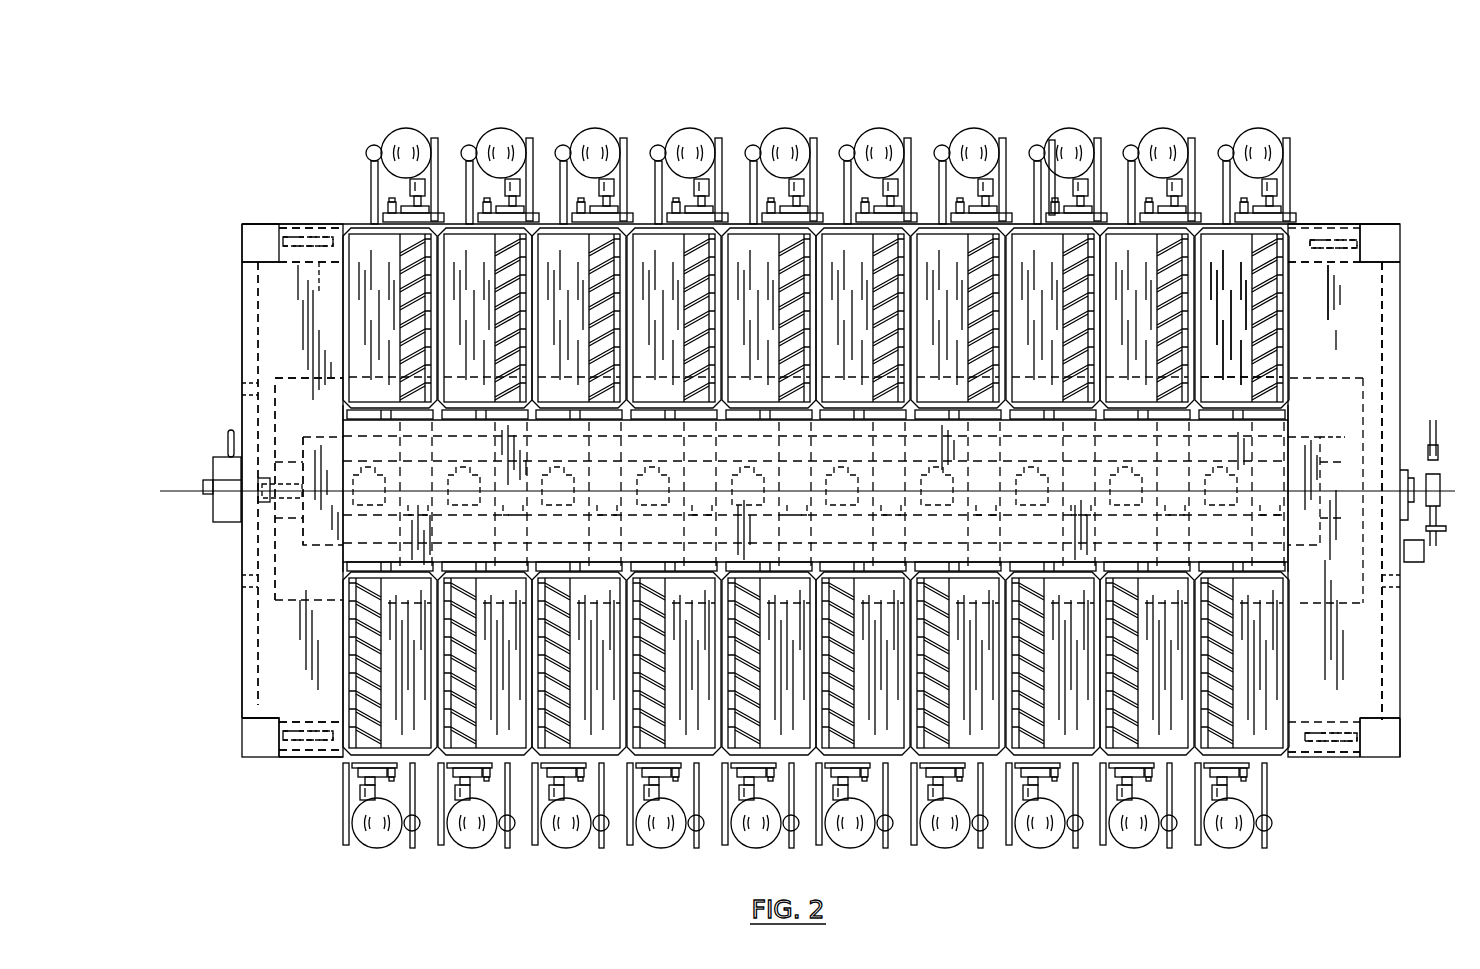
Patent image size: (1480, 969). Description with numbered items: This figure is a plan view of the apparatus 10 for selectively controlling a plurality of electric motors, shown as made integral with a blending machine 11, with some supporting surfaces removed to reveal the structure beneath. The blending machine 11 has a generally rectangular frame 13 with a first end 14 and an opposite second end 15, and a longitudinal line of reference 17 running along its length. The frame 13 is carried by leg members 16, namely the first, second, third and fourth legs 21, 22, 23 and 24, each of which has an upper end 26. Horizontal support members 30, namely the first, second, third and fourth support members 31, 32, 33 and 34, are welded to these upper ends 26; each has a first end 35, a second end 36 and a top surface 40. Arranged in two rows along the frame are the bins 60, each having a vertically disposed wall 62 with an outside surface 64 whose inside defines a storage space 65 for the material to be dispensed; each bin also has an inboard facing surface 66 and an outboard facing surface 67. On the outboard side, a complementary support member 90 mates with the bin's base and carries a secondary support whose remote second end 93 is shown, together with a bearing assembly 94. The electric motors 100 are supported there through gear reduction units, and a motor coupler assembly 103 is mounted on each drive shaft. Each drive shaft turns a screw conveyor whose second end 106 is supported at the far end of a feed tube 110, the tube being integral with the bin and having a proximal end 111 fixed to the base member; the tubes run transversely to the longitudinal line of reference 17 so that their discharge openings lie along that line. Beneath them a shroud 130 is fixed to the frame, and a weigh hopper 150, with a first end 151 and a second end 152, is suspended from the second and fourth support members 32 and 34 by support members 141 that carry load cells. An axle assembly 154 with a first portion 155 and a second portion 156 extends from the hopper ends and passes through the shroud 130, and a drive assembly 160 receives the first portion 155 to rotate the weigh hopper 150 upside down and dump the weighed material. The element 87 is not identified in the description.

The apparatus 10 is at (815, 92).
The blending machine 11 is at (1357, 224).
The frame 13 is at (1400, 313).
The first end 14 is at (242, 323).
The second end 15 is at (1400, 378).
The leg members 16 is at (242, 228).
The longitudinal line of reference 17 is at (200, 491).
The first leg 21 is at (262, 240).
The second leg 22 is at (264, 745).
The third leg 23 is at (1378, 240).
The fourth leg 24 is at (1380, 724).
The upper end 26 is at (262, 243).
The horizontal support members 30 is at (305, 225).
The first support member 31 is at (318, 282).
The second support member 32 is at (242, 626).
The third support member 33 is at (325, 760).
The fourth support member 34 is at (1384, 398).
The first end 35 is at (332, 226).
The second end 36 is at (287, 228).
The top surface 40 is at (300, 262).
The bins 60 is at (363, 322).
The wall 62 is at (1262, 304).
The outside surface 64 is at (545, 415).
The storage space 65 is at (640, 358).
The inboard facing surface 66 is at (1022, 428).
The outboard facing surface 67 is at (740, 212).
The motor mount 87 is at (532, 190).
The complementary support member 90 is at (490, 205).
The second end 93 is at (1018, 205).
The bearing assembly 94 is at (1050, 195).
The electric motors 100 is at (701, 161).
The motor coupler assembly 103 is at (640, 195).
The second end 106 is at (612, 490).
The feed tube 110 is at (572, 665).
The proximal end 111 is at (968, 254).
The shroud 130 is at (1302, 382).
The support members 141 is at (250, 392).
The weigh hopper 150 is at (1365, 420).
The first end 151 is at (332, 432).
The second end 152 is at (1347, 445).
The axle assembly 154 is at (290, 482).
The first portion 155 is at (283, 520).
The second portion 156 is at (1425, 462).
The drive assembly 160 is at (235, 522).